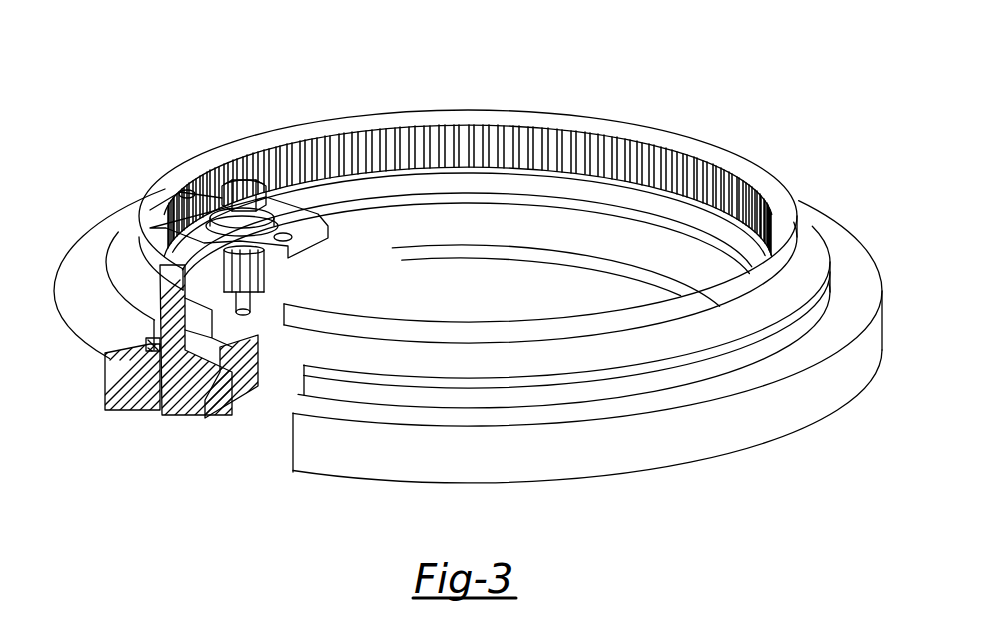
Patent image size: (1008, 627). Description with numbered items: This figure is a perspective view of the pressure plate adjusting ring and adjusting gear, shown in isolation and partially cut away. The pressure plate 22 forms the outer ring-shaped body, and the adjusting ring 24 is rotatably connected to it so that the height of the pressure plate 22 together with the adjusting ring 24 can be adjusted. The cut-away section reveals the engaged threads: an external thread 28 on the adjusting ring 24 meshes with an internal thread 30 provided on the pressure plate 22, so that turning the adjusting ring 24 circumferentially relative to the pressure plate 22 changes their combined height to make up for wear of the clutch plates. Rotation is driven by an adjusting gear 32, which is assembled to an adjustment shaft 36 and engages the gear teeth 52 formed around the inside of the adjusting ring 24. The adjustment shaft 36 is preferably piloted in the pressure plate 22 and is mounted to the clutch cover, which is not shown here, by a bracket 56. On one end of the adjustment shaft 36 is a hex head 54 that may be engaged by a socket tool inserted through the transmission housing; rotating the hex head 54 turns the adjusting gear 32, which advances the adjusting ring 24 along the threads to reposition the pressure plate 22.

The pressure plate 22 is at (102, 382).
The adjusting ring 24 is at (141, 210).
The external thread 28 is at (153, 350).
The internal thread 30 is at (147, 346).
The adjusting gear 32 is at (262, 288).
The adjustment shaft 36 is at (258, 314).
The gear teeth 52 is at (509, 136).
The hex head 54 is at (241, 176).
The bracket 56 is at (340, 214).